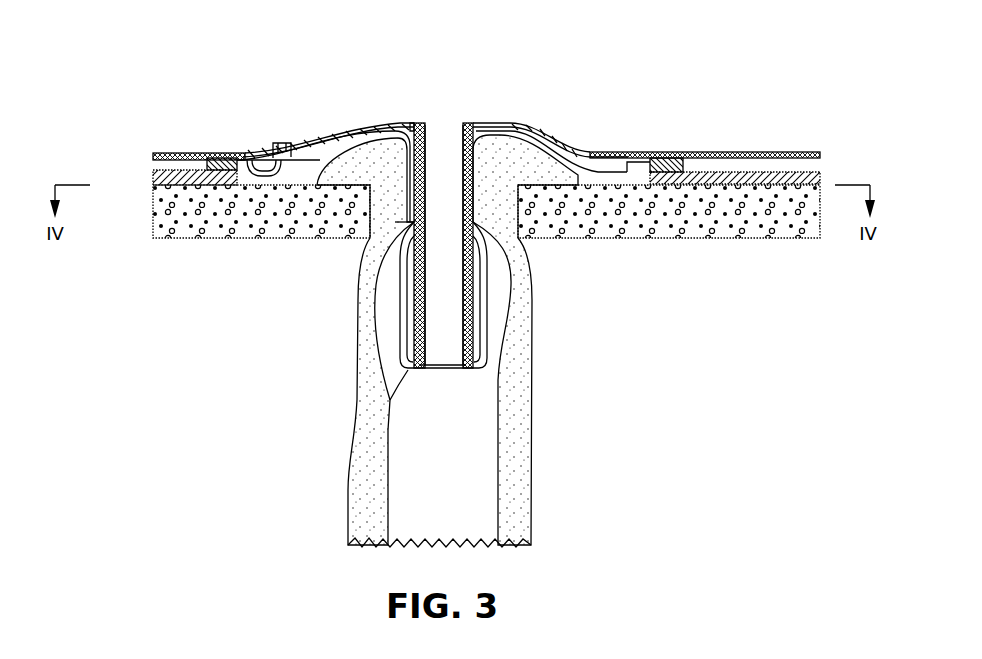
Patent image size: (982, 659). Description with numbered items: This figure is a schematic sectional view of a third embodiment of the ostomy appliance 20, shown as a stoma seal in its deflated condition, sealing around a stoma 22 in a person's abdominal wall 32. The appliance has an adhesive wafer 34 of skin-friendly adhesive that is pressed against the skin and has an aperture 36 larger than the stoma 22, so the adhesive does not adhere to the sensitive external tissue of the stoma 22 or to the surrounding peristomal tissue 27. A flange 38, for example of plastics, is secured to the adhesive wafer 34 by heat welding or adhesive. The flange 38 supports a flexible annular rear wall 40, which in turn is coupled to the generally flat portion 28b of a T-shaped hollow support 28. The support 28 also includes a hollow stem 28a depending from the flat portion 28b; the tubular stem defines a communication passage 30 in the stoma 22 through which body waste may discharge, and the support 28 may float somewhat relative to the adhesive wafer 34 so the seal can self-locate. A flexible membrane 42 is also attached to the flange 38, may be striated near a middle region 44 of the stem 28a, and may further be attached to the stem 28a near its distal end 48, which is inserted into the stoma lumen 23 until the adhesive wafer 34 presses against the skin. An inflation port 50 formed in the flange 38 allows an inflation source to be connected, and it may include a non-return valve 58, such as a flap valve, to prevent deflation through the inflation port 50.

The ostomy appliance 20 is at (519, 68).
The stoma 22 is at (540, 163).
The stoma lumen 23 is at (523, 403).
The peristomal tissue 27 is at (642, 177).
The hollow support 28 is at (432, 123).
The hollow stem 28a is at (458, 356).
The flat portion 28b is at (398, 123).
The communication passage 30 is at (438, 305).
The abdominal wall 32 is at (148, 218).
The adhesive wafer 34 is at (148, 173).
The aperture 36 is at (636, 163).
The flange 38 is at (163, 153).
The flexible annular rear wall 40 is at (340, 138).
The flexible membrane 42 is at (565, 143).
The middle region 44 is at (417, 217).
The distal end 48 is at (390, 400).
The inflation port 50 is at (276, 143).
The non-return valve 58 is at (250, 163).